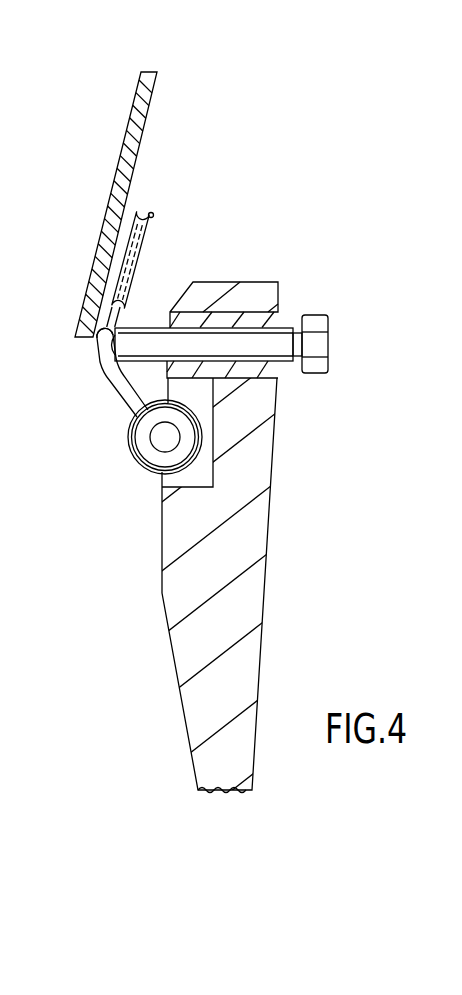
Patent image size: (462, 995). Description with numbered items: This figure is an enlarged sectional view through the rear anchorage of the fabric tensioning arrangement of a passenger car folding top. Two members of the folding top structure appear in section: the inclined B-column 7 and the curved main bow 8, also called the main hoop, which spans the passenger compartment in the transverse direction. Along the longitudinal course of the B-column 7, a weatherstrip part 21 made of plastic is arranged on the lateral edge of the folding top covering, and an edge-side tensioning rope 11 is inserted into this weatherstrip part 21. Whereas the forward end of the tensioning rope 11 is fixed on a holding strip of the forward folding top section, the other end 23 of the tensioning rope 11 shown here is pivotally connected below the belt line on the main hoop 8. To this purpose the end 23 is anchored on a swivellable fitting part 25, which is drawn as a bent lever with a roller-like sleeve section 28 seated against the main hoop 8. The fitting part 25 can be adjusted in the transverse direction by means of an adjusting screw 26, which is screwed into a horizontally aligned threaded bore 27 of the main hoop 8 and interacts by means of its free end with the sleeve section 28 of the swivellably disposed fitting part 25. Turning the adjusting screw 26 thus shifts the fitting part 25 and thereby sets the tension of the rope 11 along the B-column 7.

The B-column 7 is at (140, 103).
The main bow 8 is at (252, 567).
The tensioning rope 11 is at (118, 287).
The weatherstrip part 21 is at (150, 230).
The end of the tensioning rope 23 is at (100, 383).
The fitting part 25 is at (121, 453).
The adjusting screw 26 is at (318, 304).
The threaded bore 27 is at (250, 361).
The sleeve section 28 is at (96, 340).